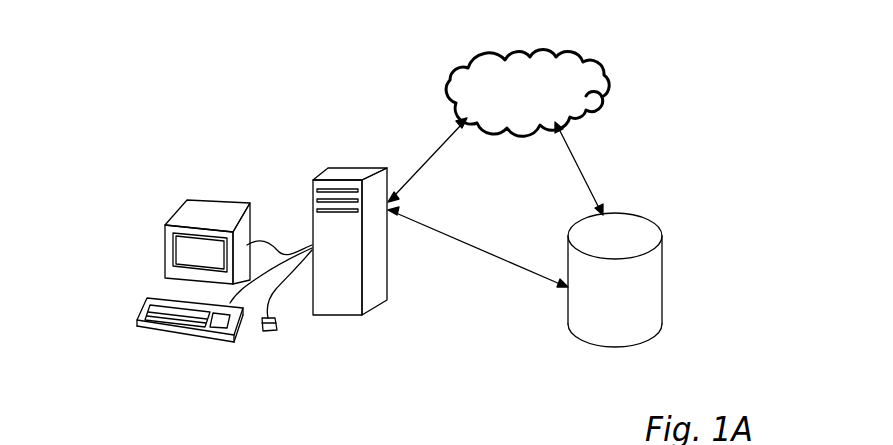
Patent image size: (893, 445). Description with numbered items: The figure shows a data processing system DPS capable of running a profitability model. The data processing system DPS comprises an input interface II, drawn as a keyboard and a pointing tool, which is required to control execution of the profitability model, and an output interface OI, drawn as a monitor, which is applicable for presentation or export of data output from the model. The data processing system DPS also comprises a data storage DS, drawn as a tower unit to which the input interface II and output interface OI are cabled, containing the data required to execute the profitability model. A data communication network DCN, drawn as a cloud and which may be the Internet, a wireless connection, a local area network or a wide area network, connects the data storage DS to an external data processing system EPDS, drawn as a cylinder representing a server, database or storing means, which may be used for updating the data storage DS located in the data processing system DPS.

The data processing system DPS is at (238, 130).
The output interface OI is at (182, 203).
The input interface II is at (147, 298).
The data storage DS is at (362, 165).
The data communication network DCN is at (578, 55).
The external patient data store EPDS is at (663, 302).